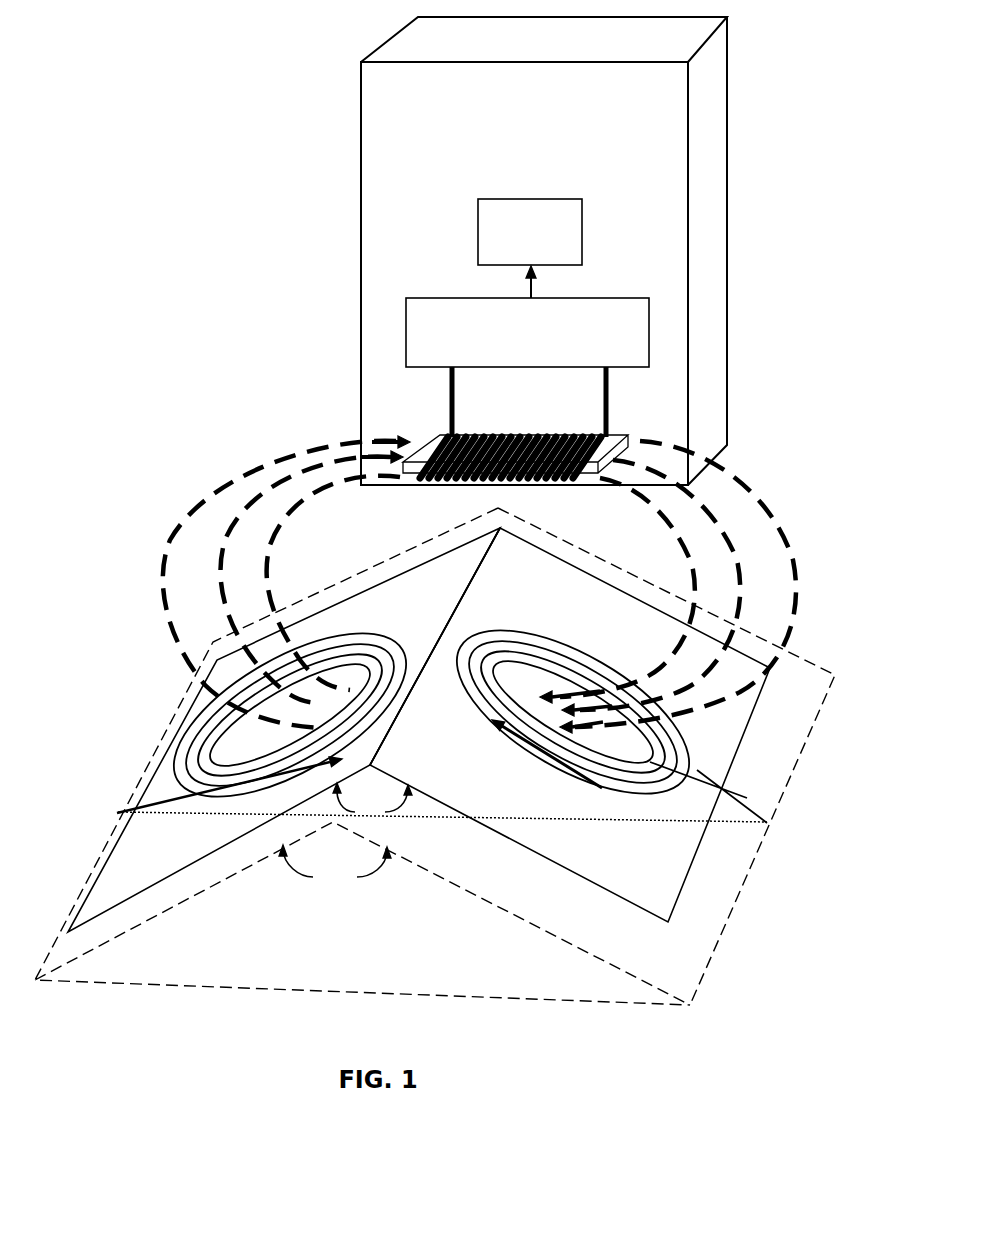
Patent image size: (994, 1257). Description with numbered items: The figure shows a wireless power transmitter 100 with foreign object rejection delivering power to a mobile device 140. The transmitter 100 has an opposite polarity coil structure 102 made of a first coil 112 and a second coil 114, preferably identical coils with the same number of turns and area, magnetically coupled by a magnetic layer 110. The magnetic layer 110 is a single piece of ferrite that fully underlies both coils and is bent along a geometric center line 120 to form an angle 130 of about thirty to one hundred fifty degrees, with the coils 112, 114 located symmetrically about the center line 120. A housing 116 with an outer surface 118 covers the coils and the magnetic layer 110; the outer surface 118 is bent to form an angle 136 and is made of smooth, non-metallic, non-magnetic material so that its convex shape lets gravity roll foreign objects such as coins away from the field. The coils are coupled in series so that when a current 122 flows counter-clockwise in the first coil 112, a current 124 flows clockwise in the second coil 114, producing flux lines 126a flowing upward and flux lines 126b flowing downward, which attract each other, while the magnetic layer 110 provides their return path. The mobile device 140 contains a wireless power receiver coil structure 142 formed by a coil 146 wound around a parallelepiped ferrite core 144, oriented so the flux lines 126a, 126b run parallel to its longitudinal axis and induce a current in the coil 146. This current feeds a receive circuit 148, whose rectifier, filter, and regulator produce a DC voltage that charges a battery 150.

The wireless power transmitter 100 is at (111, 704).
The opposite polarity coil structure 102 is at (776, 723).
The magnetic layer 110 is at (533, 853).
The first coil 112 is at (358, 632).
The second coil 114 is at (607, 660).
The housing 116 is at (146, 985).
The outer surface 118 is at (683, 953).
The geometric center line 120 is at (465, 600).
The current 122 is at (248, 795).
The current 124 is at (509, 746).
The flux lines 126a is at (247, 466).
The flux lines 126b is at (785, 540).
The angle 130 is at (372, 798).
The angle 136 is at (335, 867).
The mobile device 140 is at (361, 240).
The wireless power receiver coil structure 142 is at (414, 416).
The ferrite core 144 is at (622, 435).
The coil 146 is at (452, 396).
The receive circuit 148 is at (614, 298).
The battery 150 is at (556, 199).